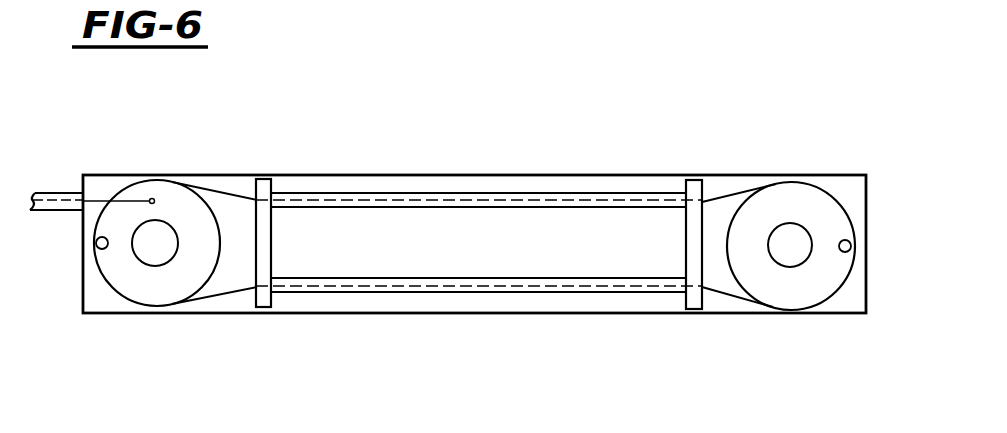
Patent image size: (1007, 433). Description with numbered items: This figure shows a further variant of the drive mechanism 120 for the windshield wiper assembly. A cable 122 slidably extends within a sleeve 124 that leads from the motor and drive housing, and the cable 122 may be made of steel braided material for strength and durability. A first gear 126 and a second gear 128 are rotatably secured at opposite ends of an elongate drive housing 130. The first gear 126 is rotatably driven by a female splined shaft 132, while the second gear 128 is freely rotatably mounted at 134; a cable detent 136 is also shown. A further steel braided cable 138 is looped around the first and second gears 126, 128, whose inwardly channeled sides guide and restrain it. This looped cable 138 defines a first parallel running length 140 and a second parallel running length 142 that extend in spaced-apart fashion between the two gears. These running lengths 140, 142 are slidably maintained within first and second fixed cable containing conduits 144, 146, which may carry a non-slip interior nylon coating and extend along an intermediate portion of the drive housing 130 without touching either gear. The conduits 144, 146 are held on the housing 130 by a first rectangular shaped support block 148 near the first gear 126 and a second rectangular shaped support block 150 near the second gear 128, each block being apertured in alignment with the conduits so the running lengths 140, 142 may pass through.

The drive mechanism 120 is at (421, 132).
The cable 122 is at (107, 200).
The sleeve 124 is at (62, 192).
The first gear 126 is at (143, 280).
The second gear 128 is at (785, 284).
The elongate drive housing 130 is at (332, 175).
The female splined shaft 132 is at (232, 195).
The free rotatable mounting 134 is at (788, 237).
The cable detent 136 is at (98, 248).
The steel braided cable 138 is at (157, 251).
The first parallel running length 140 is at (490, 200).
The second parallel running length 142 is at (452, 286).
The first cable containing conduit 144 is at (602, 193).
The second cable containing conduit 146 is at (537, 293).
The first rectangular shaped support block 148 is at (263, 179).
The second rectangular shaped support block 150 is at (690, 180).